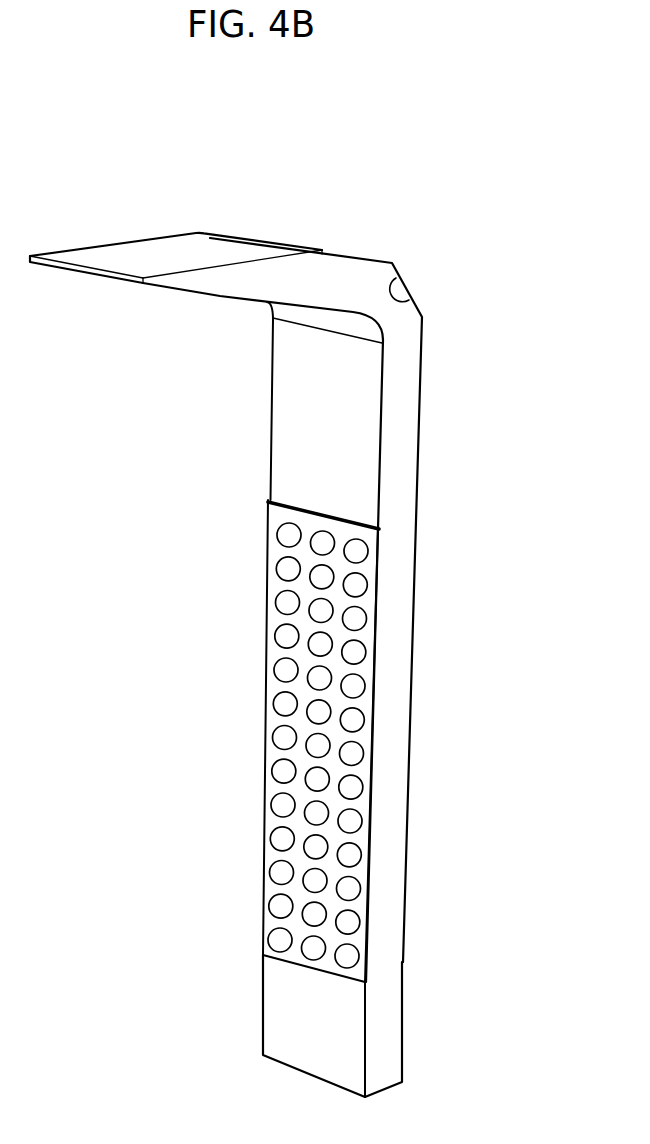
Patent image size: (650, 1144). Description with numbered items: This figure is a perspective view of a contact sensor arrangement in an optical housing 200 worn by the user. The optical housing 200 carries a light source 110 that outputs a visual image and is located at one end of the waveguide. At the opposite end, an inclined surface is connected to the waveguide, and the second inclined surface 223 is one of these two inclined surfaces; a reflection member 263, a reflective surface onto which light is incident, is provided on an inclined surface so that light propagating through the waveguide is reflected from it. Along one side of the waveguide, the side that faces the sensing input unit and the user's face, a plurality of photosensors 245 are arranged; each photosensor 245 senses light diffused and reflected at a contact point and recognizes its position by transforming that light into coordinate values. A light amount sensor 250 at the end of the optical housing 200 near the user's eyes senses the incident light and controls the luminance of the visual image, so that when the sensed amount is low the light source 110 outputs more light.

The light source 110 is at (283, 1023).
The optical housing 200 is at (333, 270).
The second inclined surface 223 is at (128, 253).
The photosensor 245 is at (278, 840).
The light amount sensor 250 is at (125, 280).
The reflection member 263 is at (413, 302).